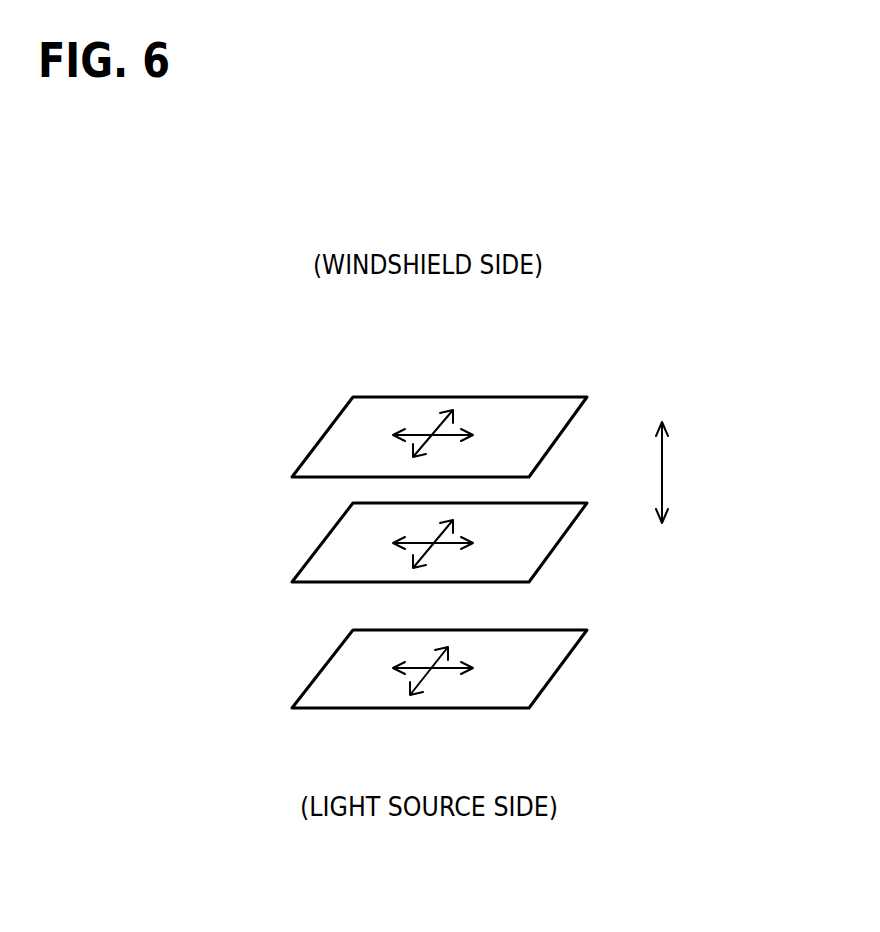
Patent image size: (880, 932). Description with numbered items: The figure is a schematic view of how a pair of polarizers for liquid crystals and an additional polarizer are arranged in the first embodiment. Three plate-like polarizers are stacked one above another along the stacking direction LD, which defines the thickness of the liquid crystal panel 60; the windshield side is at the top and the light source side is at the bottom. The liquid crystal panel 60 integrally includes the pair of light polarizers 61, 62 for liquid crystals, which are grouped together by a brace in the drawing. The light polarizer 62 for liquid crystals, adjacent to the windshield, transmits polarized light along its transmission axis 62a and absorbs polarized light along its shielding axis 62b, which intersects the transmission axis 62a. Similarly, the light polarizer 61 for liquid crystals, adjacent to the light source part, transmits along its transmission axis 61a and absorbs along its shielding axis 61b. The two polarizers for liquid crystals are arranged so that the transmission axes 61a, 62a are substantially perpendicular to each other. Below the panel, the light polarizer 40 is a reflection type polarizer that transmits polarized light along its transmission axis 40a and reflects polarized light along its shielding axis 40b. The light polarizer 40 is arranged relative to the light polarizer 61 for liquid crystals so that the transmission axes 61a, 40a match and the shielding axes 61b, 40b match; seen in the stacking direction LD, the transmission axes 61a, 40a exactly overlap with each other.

The liquid crystal panel 60 is at (238, 405).
The light polarizer for liquid crystals 62 is at (332, 421).
The transmission axis 62a is at (420, 432).
The shielding axis 62b is at (433, 430).
The light polarizer for liquid crystals 61 is at (329, 534).
The transmission axis 61a is at (437, 547).
The shielding axis 61b is at (450, 547).
The light polarizer 40 is at (330, 660).
The transmission axis 40a is at (437, 672).
The shielding axis 40b is at (450, 672).
The stacking direction LD is at (662, 472).